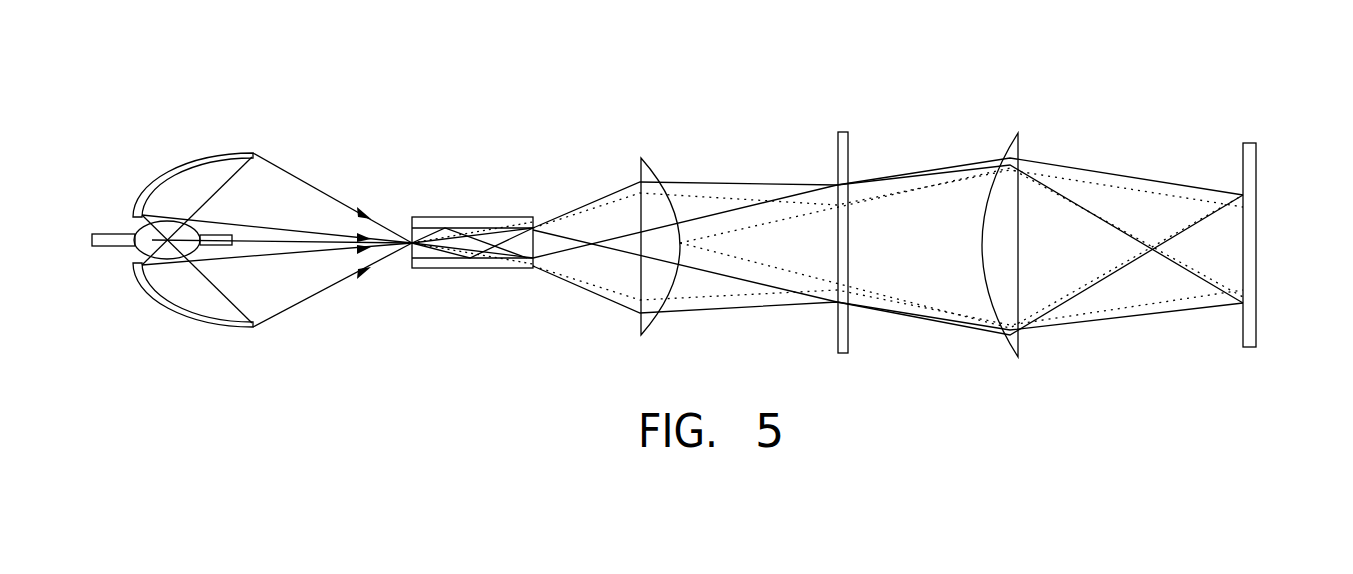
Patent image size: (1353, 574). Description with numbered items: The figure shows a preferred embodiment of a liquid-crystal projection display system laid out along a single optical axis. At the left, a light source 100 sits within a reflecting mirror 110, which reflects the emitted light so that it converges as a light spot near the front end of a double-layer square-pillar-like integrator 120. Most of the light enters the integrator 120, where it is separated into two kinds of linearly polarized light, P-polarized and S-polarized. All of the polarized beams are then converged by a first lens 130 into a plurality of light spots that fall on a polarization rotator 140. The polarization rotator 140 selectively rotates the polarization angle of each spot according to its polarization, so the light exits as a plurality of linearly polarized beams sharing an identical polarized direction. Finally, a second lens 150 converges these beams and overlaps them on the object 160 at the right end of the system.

The light source 100 is at (152, 237).
The reflecting mirror 110 is at (202, 158).
The double-layer square-pillar-like integrator 120 is at (452, 218).
The first lens 130 is at (642, 158).
The polarization rotator 140 is at (850, 142).
The second lens 150 is at (1021, 138).
The object 160 is at (1258, 182).